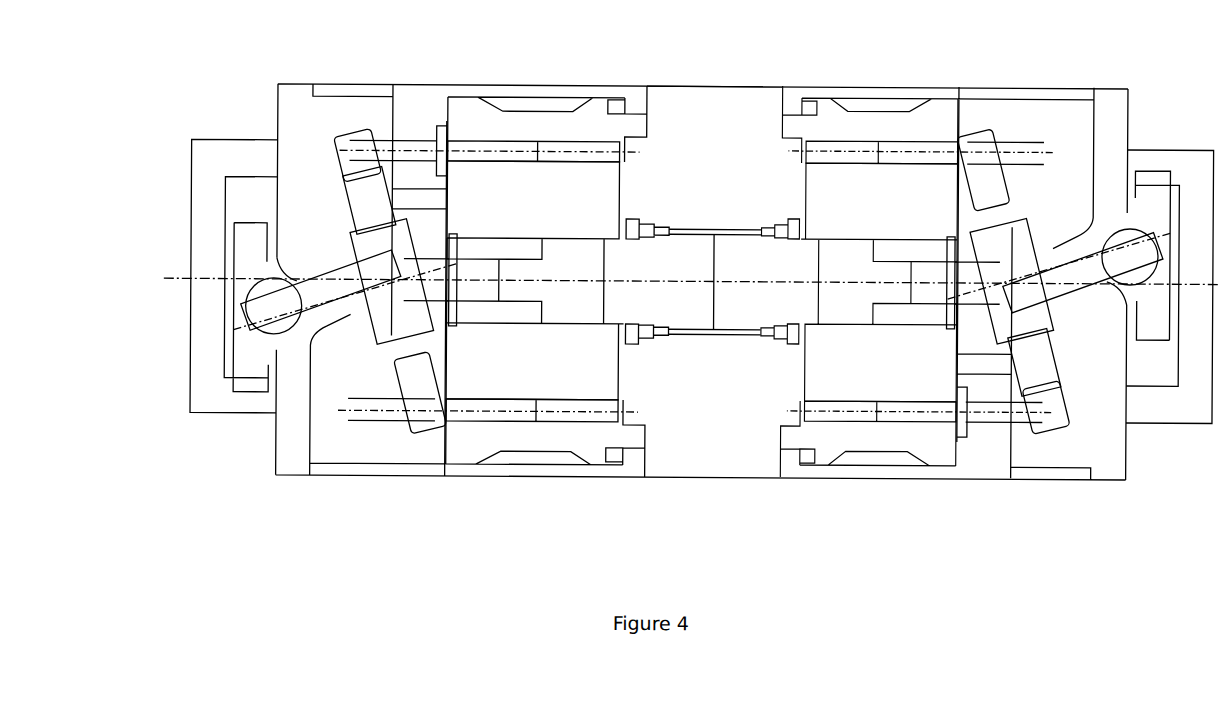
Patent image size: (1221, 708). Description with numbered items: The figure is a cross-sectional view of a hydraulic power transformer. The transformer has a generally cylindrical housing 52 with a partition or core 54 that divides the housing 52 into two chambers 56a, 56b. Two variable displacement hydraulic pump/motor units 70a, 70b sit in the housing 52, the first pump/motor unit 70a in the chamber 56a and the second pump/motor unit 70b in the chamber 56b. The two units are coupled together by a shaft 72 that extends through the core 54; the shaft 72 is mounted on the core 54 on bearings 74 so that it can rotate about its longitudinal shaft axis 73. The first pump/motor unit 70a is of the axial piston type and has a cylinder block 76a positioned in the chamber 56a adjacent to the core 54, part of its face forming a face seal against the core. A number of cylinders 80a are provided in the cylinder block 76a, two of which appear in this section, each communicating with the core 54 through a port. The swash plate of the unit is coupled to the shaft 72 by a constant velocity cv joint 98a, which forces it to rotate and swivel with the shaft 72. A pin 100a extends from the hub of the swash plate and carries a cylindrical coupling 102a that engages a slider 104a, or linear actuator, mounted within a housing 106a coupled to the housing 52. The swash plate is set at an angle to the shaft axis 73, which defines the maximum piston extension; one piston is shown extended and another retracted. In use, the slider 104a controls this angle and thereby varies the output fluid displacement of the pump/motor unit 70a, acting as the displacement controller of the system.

The housing 52 is at (906, 97).
The core 54 is at (688, 116).
The first chamber 56a is at (361, 412).
The second chamber 56b is at (958, 436).
The first pump/motor unit 70a is at (518, 478).
The second pump/motor unit 70b is at (862, 478).
The shaft 72 is at (771, 253).
The shaft axis 73 is at (186, 282).
The bearings 74 is at (746, 220).
The cylinder block 76a is at (488, 131).
The cylinders 80a is at (556, 139).
The cv joint 98a is at (391, 270).
The pin 100a is at (314, 280).
The cylindrical coupling 102a is at (267, 316).
The slider 104a is at (255, 243).
The slider housing 106a is at (213, 158).